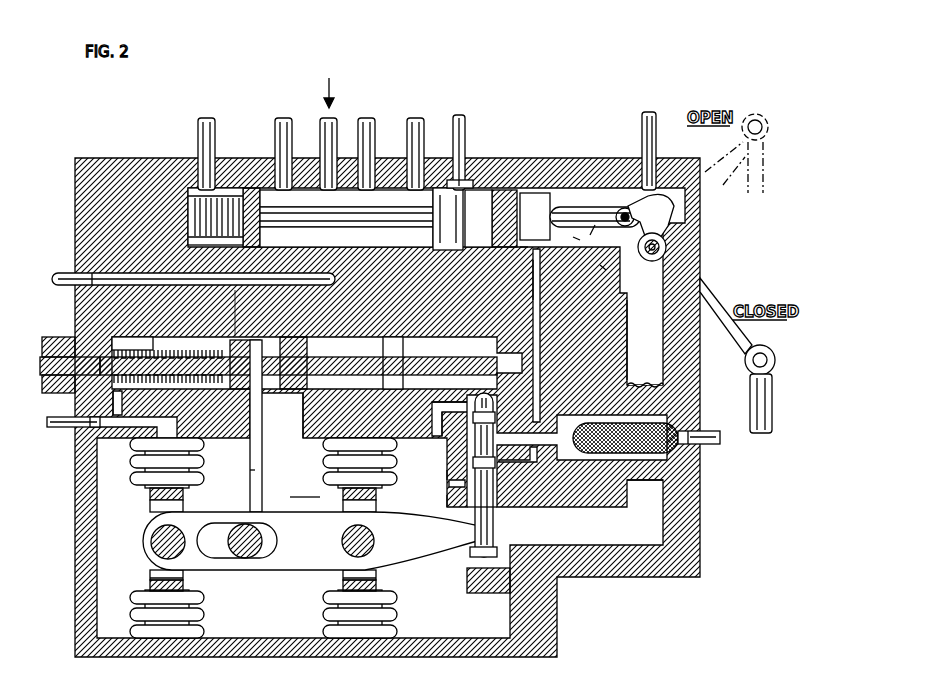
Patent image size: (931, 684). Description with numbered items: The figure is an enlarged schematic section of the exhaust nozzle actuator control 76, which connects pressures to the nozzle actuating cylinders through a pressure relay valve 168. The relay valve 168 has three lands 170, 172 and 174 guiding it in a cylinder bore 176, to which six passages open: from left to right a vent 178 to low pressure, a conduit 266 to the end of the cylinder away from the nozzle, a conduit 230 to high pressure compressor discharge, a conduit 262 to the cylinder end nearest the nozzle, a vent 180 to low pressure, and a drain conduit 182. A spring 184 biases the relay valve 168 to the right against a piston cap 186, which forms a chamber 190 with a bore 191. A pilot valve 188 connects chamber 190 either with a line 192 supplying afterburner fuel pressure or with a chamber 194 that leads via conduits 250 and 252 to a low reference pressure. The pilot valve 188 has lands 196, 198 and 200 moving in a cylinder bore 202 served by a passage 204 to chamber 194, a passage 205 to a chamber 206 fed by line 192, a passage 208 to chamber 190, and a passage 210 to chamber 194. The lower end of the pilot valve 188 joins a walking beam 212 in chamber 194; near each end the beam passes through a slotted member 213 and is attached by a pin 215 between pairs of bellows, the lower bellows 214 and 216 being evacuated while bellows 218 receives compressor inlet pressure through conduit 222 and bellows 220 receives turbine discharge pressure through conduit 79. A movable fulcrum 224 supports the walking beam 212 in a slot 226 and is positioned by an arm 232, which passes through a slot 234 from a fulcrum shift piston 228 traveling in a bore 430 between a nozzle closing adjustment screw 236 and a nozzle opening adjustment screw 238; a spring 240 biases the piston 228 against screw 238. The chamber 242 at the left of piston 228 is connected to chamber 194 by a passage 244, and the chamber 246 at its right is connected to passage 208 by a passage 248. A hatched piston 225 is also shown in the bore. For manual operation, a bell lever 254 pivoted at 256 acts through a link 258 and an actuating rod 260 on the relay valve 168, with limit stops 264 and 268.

The exhaust nozzle actuator control 76 is at (122, 155).
The conduit 79 is at (66, 273).
The pressure relay valve 168 is at (418, 232).
The land 170 is at (272, 238).
The land 172 is at (388, 224).
The land 174 is at (466, 182).
The cylinder bore 176 is at (405, 203).
The vent 178 is at (197, 127).
The vent 180 is at (423, 118).
The conduit 182 is at (465, 125).
The spring 184 is at (272, 198).
The piston cap 186 is at (540, 195).
The pilot valve 188 is at (497, 533).
The chamber 190 is at (528, 232).
The bore 191 is at (587, 207).
The line 192 is at (705, 444).
The chamber 194 is at (305, 489).
The land 196 is at (445, 440).
The land 198 is at (449, 484).
The land 200 is at (473, 513).
The cylinder bore 202 is at (447, 472).
The passage 204 is at (433, 437).
The passage 205 is at (575, 463).
The chamber 206 is at (592, 460).
The passage 208 is at (573, 237).
The passage 210 is at (447, 497).
The walking beam 212 is at (298, 556).
The slotted member 213 is at (152, 576).
The lower bellows 214 is at (204, 612).
The pin 215 is at (152, 534).
The lower bellows 216 is at (398, 615).
The bellows 218 is at (222, 473).
The bellows 220 is at (325, 470).
The conduit 222 is at (68, 427).
The movable fulcrum 224 is at (255, 538).
The piston 225 is at (243, 340).
The slot 226 is at (218, 555).
The fulcrum shift piston 228 is at (247, 338).
The conduit 230 is at (321, 125).
The arm 232 is at (252, 490).
The slot 234 is at (300, 436).
The nozzle closing adjustment screw 236 is at (118, 357).
The nozzle opening adjustment screw 238 is at (450, 355).
The spring 240 is at (228, 455).
The chamber 242 is at (90, 410).
The passage 244 is at (117, 430).
The chamber 246 is at (390, 340).
The passage 248 is at (530, 335).
The conduit 250 is at (656, 120).
The conduit 252 is at (658, 368).
The bell lever 254 is at (662, 236).
The pivot 256 is at (652, 261).
The link 258 is at (620, 205).
The actuating rod 260 is at (578, 207).
The conduit 262 is at (368, 118).
The limit stop 264 is at (676, 208).
The conduit 266 is at (274, 128).
The limit stop 268 is at (606, 270).
The bore 430 is at (122, 350).